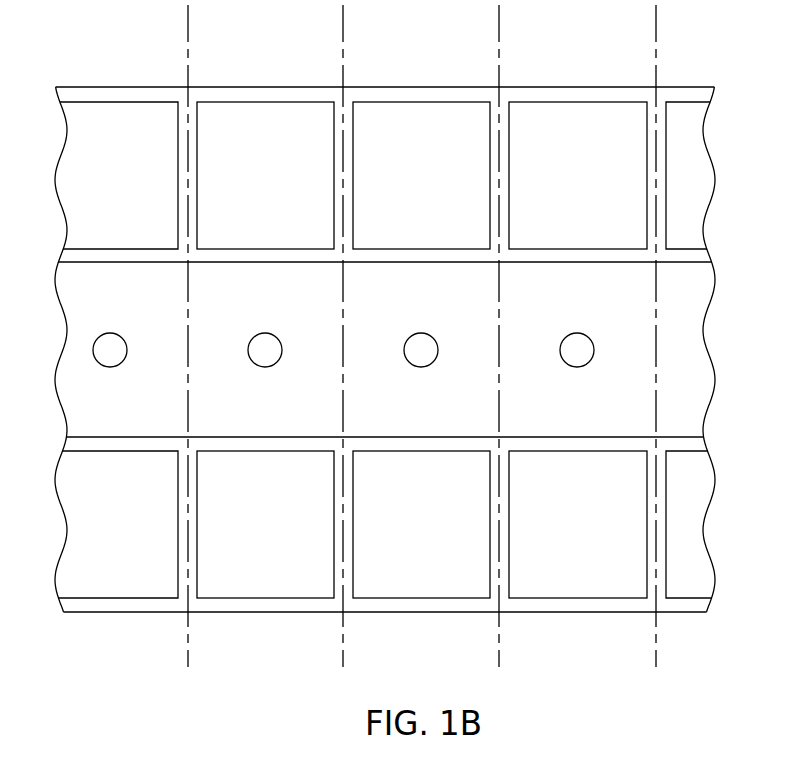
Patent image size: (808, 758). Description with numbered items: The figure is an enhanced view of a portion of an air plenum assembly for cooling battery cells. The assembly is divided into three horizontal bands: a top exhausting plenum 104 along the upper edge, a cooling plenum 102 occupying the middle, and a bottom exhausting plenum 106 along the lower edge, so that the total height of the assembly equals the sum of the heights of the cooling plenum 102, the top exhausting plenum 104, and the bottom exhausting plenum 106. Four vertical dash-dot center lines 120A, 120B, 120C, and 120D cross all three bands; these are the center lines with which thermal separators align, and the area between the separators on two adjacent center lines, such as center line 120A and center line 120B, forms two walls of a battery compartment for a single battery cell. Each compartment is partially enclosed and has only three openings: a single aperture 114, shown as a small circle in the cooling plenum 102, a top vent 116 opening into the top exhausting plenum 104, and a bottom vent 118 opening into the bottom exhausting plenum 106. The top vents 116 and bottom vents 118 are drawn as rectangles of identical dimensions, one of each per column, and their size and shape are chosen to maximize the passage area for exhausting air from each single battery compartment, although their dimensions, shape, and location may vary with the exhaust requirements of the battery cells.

The cooling plenum 102 is at (698, 349).
The top exhausting plenum 104 is at (704, 96).
The bottom exhausting plenum 106 is at (703, 607).
The aperture 114 is at (127, 346).
The top vent 116 is at (142, 188).
The bottom vent 118 is at (142, 540).
The center line 120A is at (188, 33).
The center line 120B is at (343, 33).
The center line 120C is at (499, 33).
The center line 120D is at (656, 33).